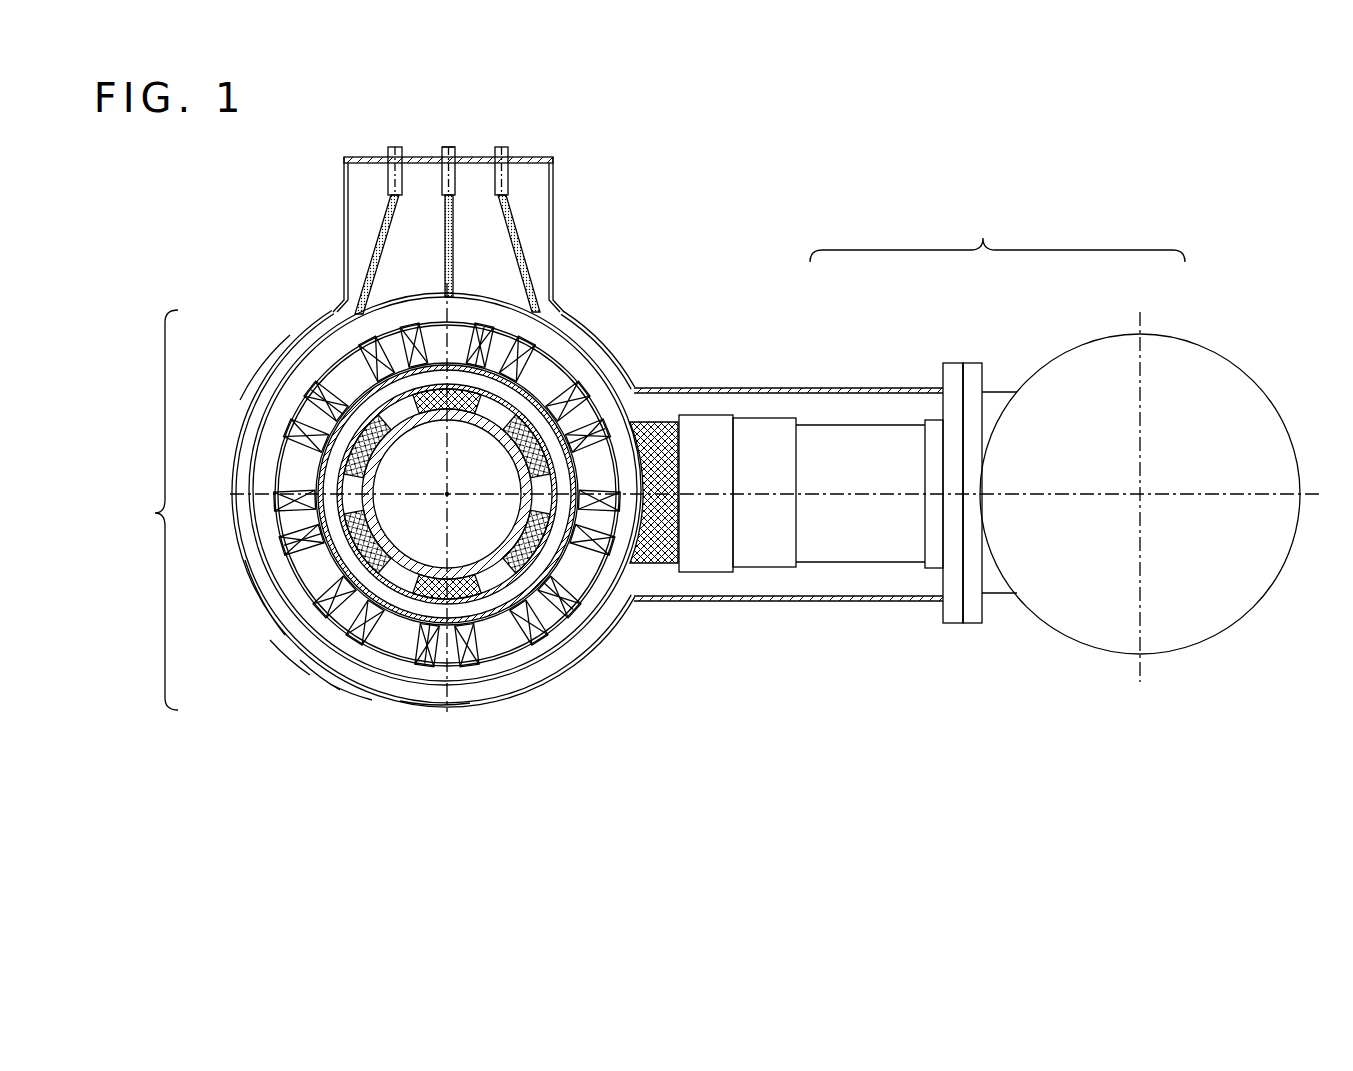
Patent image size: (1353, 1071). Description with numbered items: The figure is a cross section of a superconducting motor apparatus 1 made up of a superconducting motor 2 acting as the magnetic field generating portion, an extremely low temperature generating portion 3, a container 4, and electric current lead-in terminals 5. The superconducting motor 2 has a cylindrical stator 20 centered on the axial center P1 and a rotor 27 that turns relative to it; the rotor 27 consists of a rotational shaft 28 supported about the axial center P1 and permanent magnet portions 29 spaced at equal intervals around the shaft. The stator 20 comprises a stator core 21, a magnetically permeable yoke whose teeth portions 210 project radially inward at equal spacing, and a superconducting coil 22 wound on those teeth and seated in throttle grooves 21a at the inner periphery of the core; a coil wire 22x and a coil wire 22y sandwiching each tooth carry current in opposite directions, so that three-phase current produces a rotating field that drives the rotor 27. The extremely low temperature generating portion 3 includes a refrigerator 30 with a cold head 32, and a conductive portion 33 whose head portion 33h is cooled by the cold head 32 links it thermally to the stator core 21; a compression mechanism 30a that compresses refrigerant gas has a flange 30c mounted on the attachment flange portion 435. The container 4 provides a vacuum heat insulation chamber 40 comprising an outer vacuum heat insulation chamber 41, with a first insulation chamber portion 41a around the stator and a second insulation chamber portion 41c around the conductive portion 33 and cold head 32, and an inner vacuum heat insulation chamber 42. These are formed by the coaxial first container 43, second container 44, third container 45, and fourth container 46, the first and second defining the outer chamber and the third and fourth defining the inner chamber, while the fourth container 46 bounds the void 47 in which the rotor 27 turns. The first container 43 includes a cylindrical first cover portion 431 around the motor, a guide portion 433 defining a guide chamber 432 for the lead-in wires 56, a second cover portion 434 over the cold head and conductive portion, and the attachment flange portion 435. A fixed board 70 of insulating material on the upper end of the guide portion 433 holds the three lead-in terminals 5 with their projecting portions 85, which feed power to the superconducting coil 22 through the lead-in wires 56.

The superconducting motor apparatus 1 is at (159, 510).
The superconducting motor 2 is at (141, 510).
The extremely low temperature generating portion 3 is at (1048, 481).
The container 4 is at (430, 710).
The electric current lead-in terminals 5 is at (386, 165).
The stator 20 is at (520, 660).
The stator core 21 is at (322, 455).
The throttle grooves 21a is at (560, 318).
The superconducting coil 22 is at (330, 378).
The coil wire 22x is at (285, 590).
The coil wire 22y is at (330, 640).
The rotor 27 is at (385, 520).
The rotational shaft 28 is at (380, 467).
The permanent magnet portions 29 is at (405, 420).
The refrigerator 30 is at (1062, 345).
The compression mechanism 30a is at (1140, 333).
The flange 30c is at (975, 625).
The cold head 32 is at (768, 425).
The conductive portion 33 is at (690, 420).
The head portion 33h is at (718, 425).
The vacuum heat insulation chamber 40 is at (612, 352).
The outer vacuum heat insulation chamber 41 is at (312, 345).
The first insulation chamber portion 41a is at (433, 509).
The second insulation chamber portion 41c is at (850, 393).
The inner vacuum heat insulation chamber 42 is at (335, 330).
The first container 43 is at (320, 725).
The second container 44 is at (340, 690).
The third container 45 is at (280, 640).
The fourth container 46 is at (265, 615).
The void 47 is at (458, 533).
The lead-in wires 56 is at (378, 242).
The fixed board 70 is at (556, 195).
The projecting portions 85 is at (457, 175).
The teeth portions 210 is at (455, 305).
The first cover portion 431 is at (250, 355).
The guide chamber 432 is at (368, 205).
The guide portion 433 is at (343, 248).
The second cover portion 434 is at (897, 390).
The attachment flange portion 435 is at (962, 625).
The axial center P1 is at (449, 492).